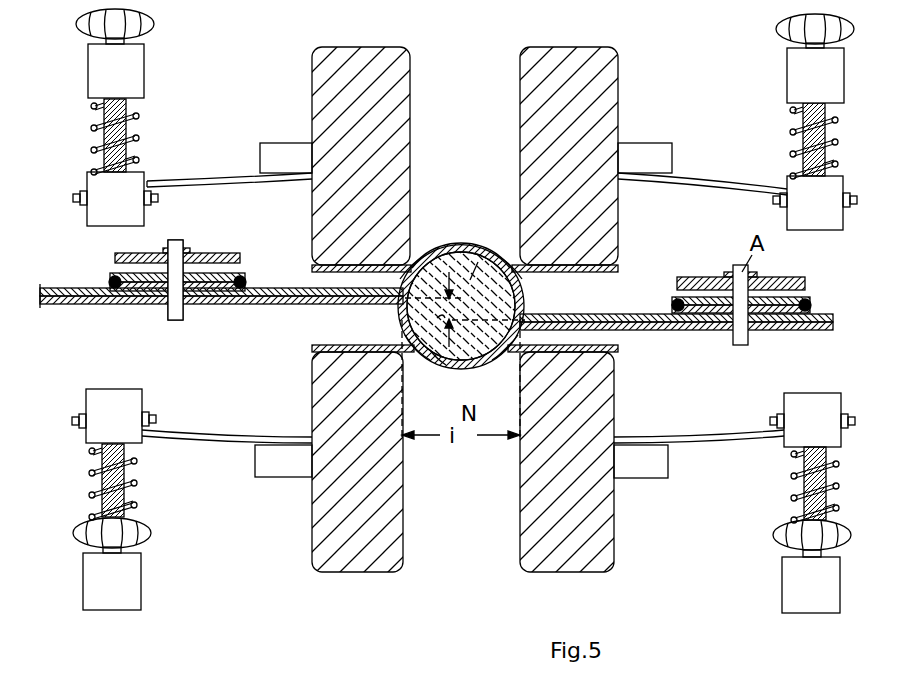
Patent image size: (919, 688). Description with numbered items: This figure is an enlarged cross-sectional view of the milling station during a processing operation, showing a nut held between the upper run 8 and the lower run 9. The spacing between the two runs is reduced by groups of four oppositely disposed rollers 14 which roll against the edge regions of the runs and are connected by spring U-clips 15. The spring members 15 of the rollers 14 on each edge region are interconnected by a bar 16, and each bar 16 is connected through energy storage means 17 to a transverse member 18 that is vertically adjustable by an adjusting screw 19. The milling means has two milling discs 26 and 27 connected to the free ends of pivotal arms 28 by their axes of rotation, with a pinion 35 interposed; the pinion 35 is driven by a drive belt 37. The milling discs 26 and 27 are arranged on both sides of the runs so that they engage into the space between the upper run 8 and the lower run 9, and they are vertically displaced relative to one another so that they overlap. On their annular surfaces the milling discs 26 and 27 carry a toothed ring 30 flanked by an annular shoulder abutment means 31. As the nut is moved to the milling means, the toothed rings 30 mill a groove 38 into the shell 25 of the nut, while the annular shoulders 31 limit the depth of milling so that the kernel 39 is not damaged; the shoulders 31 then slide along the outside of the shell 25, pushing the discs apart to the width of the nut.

The upper run 8 is at (432, 250).
The lower run 9 is at (486, 362).
The rollers 14 is at (330, 70).
The spring U-clips 15 is at (196, 178).
The bar 16 is at (100, 182).
The energy storage means 17 is at (95, 120).
The transverse members 18 is at (100, 62).
The adjusting screws 19 is at (152, 24).
The shell 25 is at (446, 364).
The milling disc 26 is at (245, 305).
The milling disc 27 is at (693, 331).
The pivotal arms 28 is at (805, 284).
The toothed ring 30 is at (410, 285).
The annular shoulder abutment means 31 is at (401, 312).
The pinion 35 is at (695, 292).
The drive belt 37 is at (812, 304).
The groove 38 is at (449, 279).
The kernel 39 is at (480, 250).